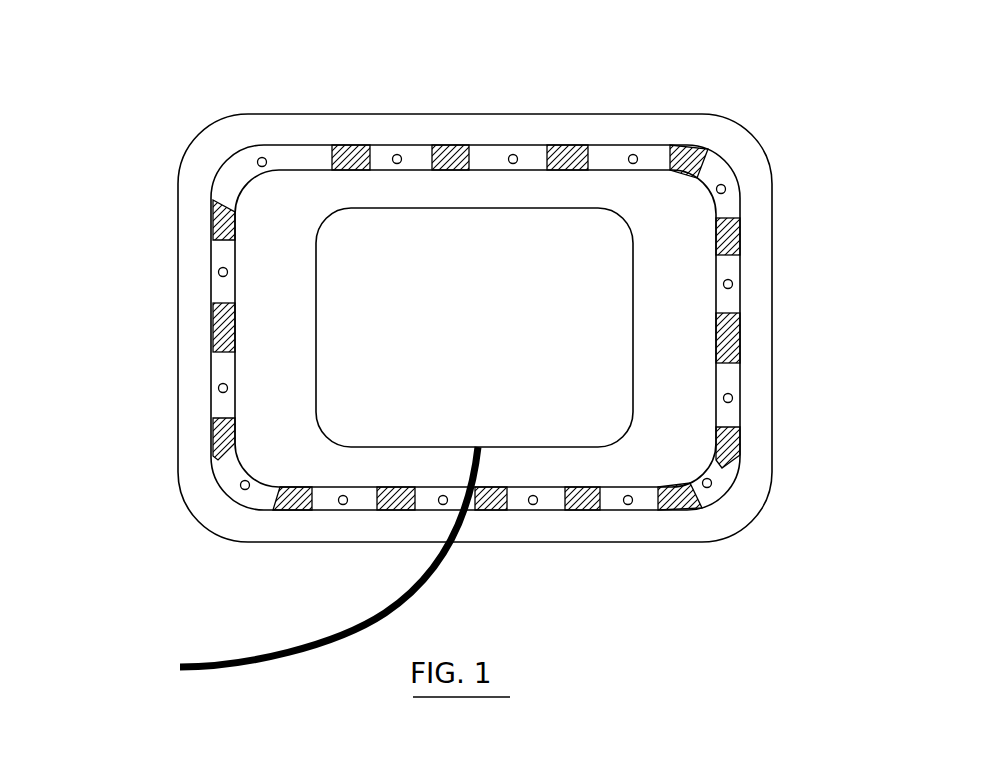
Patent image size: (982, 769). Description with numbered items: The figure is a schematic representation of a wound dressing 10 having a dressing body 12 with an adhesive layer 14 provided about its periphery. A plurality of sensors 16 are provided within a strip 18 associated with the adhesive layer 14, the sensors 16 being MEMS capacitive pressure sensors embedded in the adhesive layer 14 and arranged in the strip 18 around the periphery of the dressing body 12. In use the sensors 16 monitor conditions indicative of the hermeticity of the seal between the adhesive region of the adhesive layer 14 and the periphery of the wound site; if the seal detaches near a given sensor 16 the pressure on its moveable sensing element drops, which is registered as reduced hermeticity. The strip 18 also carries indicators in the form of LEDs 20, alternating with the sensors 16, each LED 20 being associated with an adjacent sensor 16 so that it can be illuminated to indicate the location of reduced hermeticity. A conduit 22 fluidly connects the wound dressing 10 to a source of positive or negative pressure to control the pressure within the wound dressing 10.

The wound dressing 10 is at (97, 192).
The dressing body 12 is at (570, 235).
The adhesive layer 14 is at (753, 489).
The sensors 16 is at (740, 232).
The strip 18 is at (285, 145).
The LEDs 20 is at (638, 156).
The conduit 22 is at (222, 670).